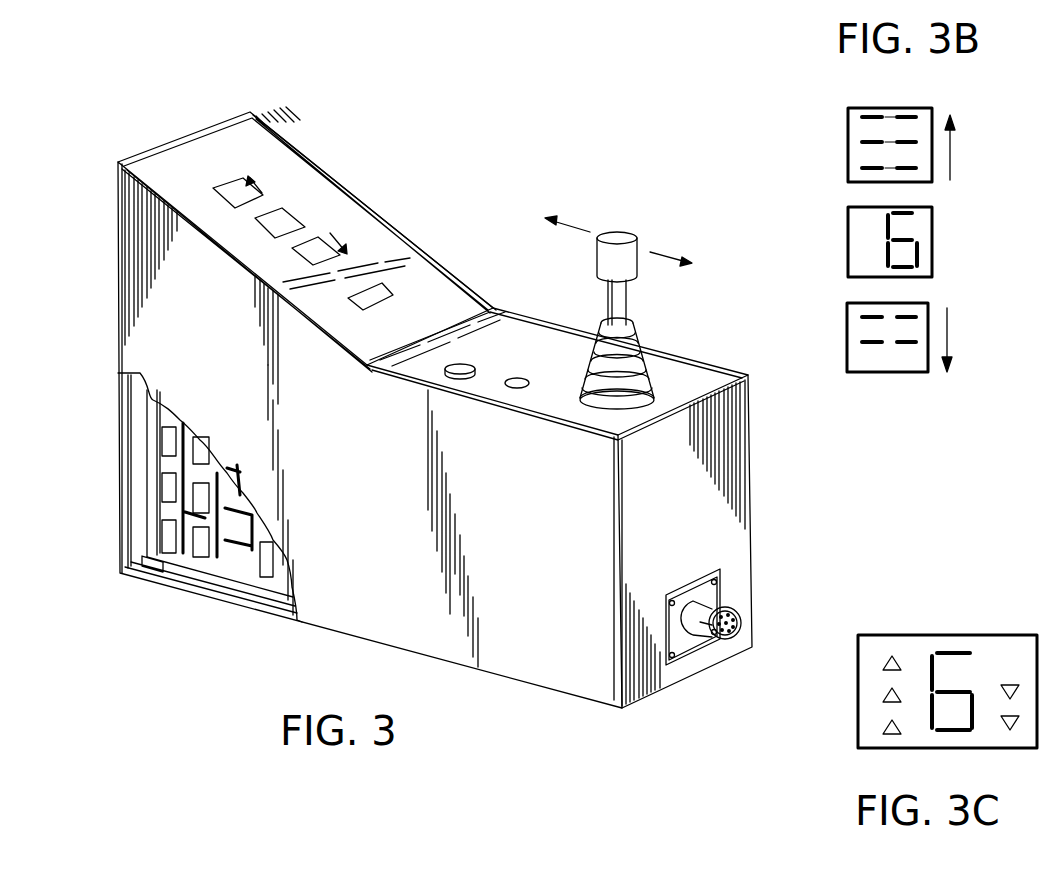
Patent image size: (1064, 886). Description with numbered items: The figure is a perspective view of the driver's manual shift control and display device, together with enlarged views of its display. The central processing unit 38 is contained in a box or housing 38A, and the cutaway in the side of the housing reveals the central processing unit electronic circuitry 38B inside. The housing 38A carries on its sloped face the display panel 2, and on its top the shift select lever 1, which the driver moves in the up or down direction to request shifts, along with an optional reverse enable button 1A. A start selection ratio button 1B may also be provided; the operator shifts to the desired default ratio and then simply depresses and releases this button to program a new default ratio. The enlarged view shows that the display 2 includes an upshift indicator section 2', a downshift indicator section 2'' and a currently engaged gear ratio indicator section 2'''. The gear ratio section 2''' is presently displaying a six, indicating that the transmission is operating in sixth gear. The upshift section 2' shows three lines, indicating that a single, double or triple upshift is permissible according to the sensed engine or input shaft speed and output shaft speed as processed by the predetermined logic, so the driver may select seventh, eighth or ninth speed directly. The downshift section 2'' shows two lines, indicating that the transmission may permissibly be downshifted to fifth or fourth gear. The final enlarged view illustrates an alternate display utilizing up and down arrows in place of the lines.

In FIG. 3, the shift select lever 1 is at (622, 232).
In FIG. 3, the reverse enable button 1A is at (472, 387).
In FIG. 3, the start selection ratio button 1B is at (521, 392).
In FIG. 3, the display panel 2 is at (370, 253).
In FIG. 3B, the upshift indicator display 2' is at (901, 126).
In FIG. 3B, the downshift indicator display 2'' is at (908, 321).
In FIG. 3B, the currently engaged gear ratio display 2''' is at (902, 232).
In FIG. 3, the central processing unit 38 is at (176, 497).
In FIG. 3, the housing 38A is at (372, 622).
In FIG. 3, the central processing unit electronic circuitry 38B is at (167, 485).